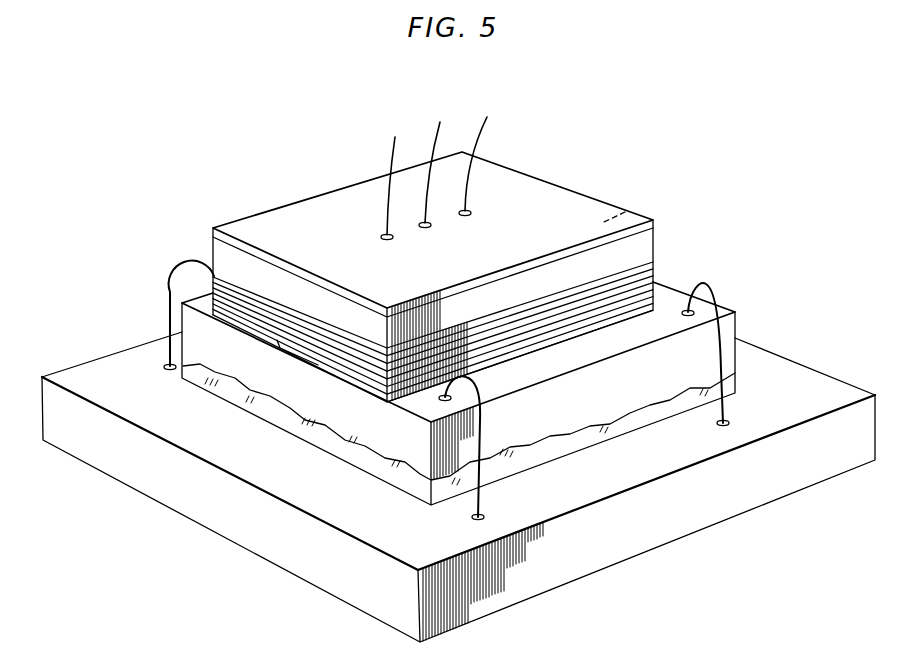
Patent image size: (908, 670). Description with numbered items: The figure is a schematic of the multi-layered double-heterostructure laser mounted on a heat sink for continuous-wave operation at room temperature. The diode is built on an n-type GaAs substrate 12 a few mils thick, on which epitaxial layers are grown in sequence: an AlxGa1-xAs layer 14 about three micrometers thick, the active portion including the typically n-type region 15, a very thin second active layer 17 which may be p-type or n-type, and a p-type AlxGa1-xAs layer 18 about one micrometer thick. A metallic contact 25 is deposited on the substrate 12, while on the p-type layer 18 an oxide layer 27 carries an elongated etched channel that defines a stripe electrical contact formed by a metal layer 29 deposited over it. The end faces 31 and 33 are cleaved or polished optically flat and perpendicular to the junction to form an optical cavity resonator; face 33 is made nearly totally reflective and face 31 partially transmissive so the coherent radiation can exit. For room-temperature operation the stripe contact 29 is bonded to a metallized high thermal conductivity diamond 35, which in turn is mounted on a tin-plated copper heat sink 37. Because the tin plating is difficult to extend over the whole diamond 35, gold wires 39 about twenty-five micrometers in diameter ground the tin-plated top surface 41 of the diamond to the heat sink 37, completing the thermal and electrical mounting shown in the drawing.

The n-type GaAs substrate 12 is at (218, 253).
The AlxGa1-xAs layer 14 is at (251, 295).
The n-type region 15 is at (288, 319).
The second active layer 17 is at (250, 307).
The p-type AlxGa1-xAs layer 18 is at (373, 370).
The metallic contact 25 is at (335, 203).
The oxide layer 27 is at (338, 370).
The metal layer 29 is at (297, 357).
The end face 31 is at (352, 313).
The end face 33 is at (625, 212).
The diamond 35 is at (257, 404).
The copper heat sink 37 is at (218, 522).
The gold wires 39 is at (166, 309).
The top surface 41 is at (392, 447).